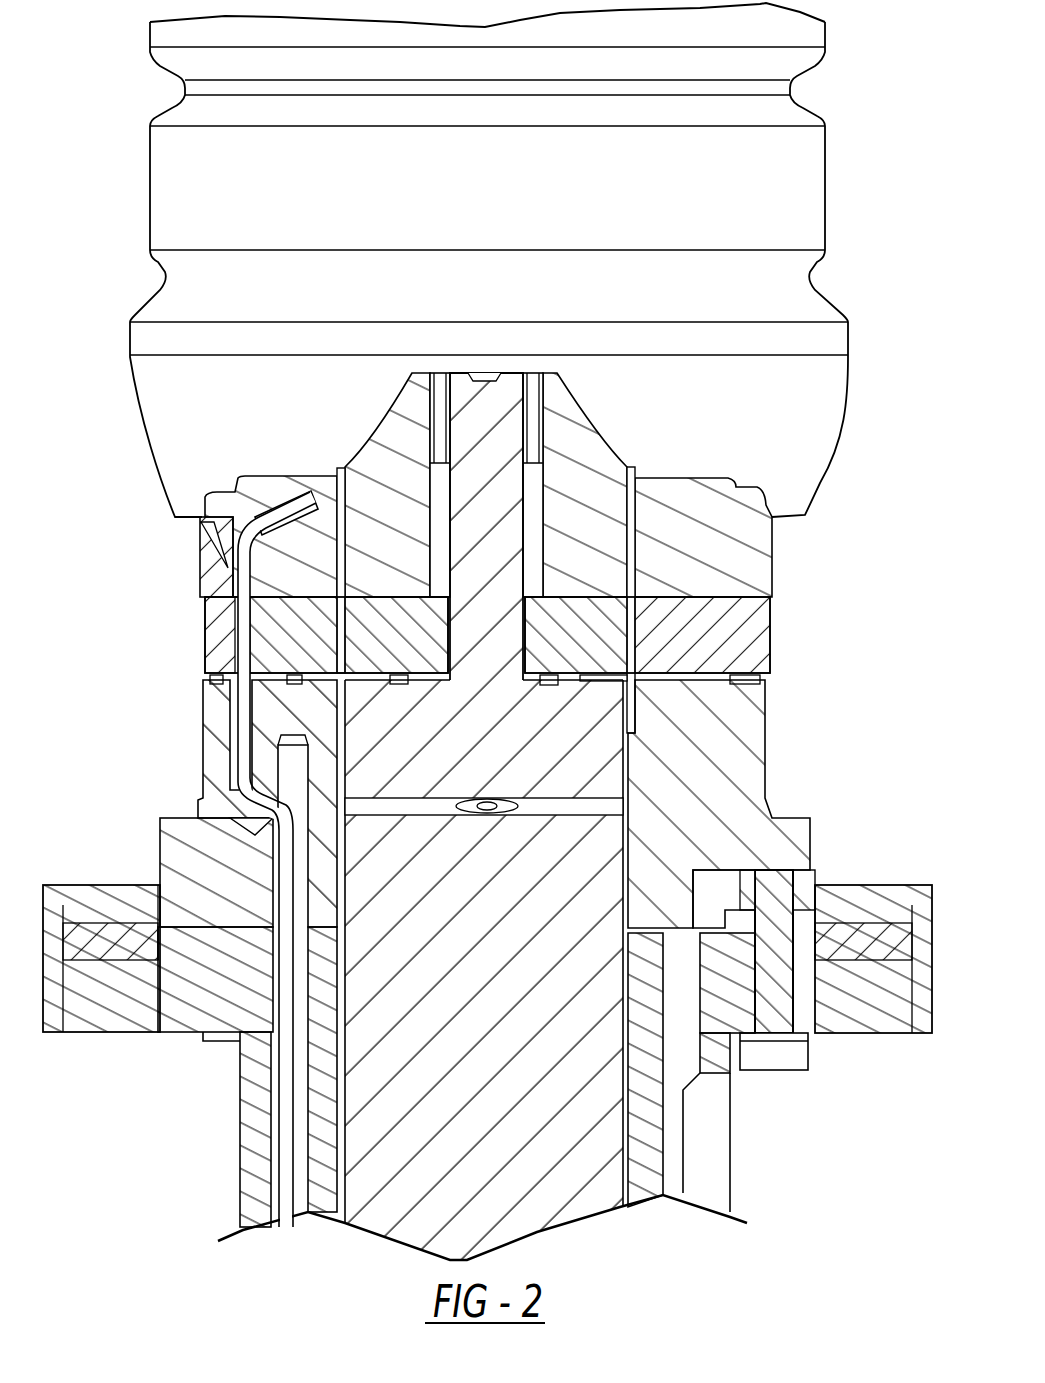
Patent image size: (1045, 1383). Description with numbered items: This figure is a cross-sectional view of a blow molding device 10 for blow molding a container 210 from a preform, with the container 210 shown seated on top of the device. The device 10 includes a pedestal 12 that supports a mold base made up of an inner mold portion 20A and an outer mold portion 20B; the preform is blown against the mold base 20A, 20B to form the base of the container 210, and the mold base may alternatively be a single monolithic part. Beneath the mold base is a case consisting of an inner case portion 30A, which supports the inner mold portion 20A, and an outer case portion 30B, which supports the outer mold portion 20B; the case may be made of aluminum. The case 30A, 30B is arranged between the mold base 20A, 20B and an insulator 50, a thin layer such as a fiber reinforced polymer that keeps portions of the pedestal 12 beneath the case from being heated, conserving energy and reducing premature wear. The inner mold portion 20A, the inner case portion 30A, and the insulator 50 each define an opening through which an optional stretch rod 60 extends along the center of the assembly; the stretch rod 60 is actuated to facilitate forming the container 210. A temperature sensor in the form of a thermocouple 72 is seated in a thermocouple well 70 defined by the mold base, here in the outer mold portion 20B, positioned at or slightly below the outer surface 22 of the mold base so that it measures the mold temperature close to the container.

The blow molding device 10 is at (178, 606).
The pedestal 12 is at (182, 693).
The inner mold portion 20A is at (565, 405).
The outer mold portion 20B is at (730, 557).
The outer surface 22 is at (318, 490).
The inner case portion 30A is at (563, 630).
The outer case portion 30B is at (683, 630).
The insulator 50 is at (735, 678).
The stretch rod 60 is at (485, 420).
The thermocouple well 70 is at (200, 550).
The thermocouple 72 is at (277, 507).
The container 210 is at (150, 210).